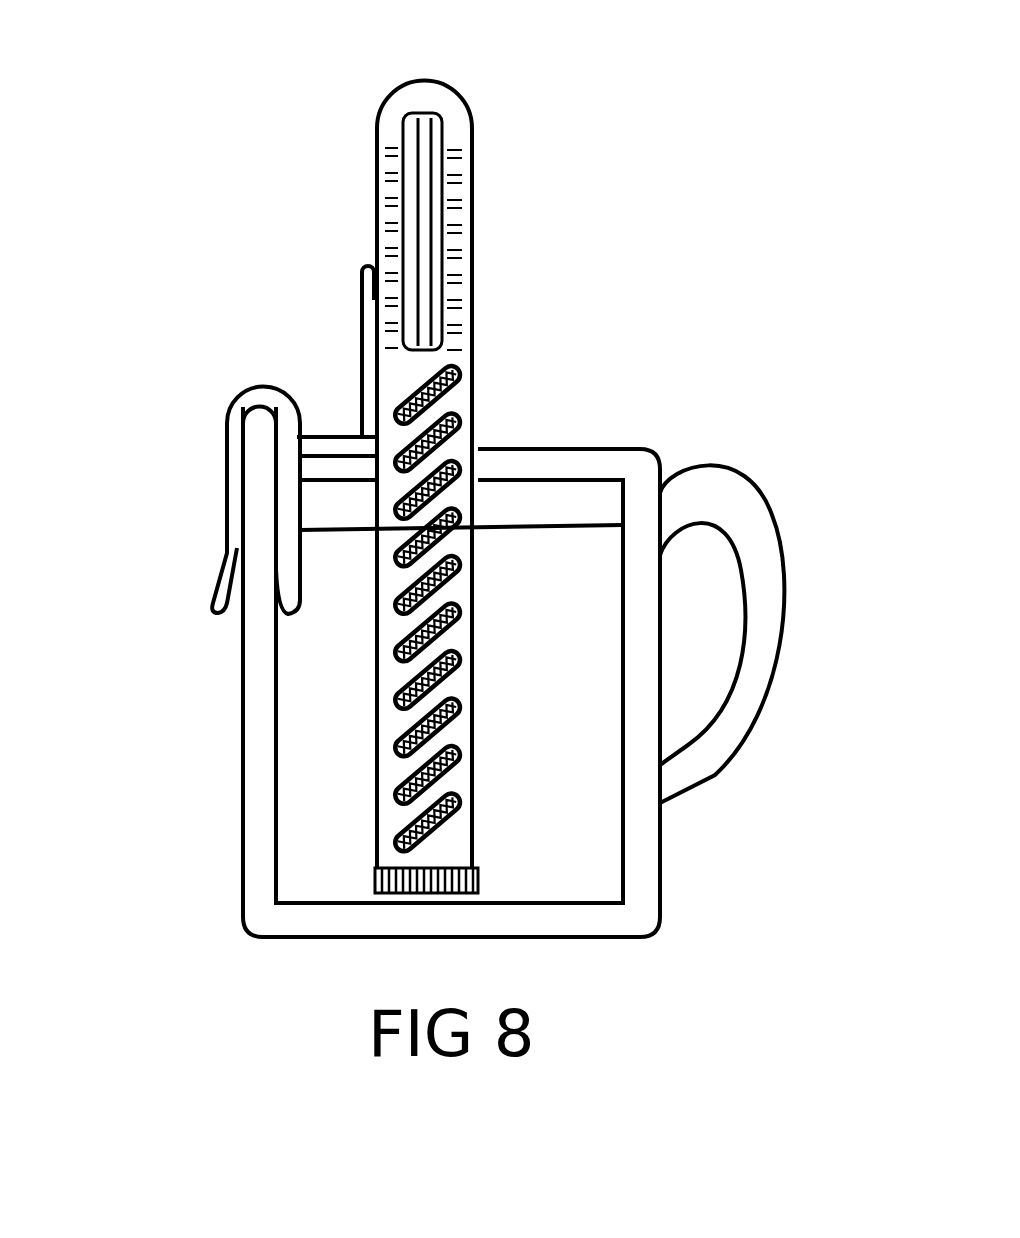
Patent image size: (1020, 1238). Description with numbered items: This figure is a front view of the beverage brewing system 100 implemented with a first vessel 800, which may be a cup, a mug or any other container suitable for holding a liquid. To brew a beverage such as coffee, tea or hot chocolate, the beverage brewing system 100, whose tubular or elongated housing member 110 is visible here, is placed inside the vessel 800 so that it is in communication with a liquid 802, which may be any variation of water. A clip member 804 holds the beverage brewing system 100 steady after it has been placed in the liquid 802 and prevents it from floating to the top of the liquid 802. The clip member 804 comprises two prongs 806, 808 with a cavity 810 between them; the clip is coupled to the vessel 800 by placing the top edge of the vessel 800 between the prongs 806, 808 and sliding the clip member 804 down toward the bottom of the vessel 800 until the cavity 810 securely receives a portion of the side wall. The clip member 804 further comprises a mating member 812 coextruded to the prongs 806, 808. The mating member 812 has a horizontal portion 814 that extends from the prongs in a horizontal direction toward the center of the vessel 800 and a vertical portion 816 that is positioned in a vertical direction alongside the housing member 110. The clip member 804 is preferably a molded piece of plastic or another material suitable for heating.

The beverage brewing system 100 is at (426, 449).
The elongated housing member 110 is at (377, 107).
The vessel 800 is at (452, 606).
The liquid 802 is at (312, 788).
The clip member 804 is at (226, 474).
The prong 806 is at (232, 548).
The prong 808 is at (290, 578).
The cavity 810 is at (248, 426).
The mating member 812 is at (362, 312).
The horizontal portion 814 is at (330, 437).
The vertical portion 816 is at (358, 279).